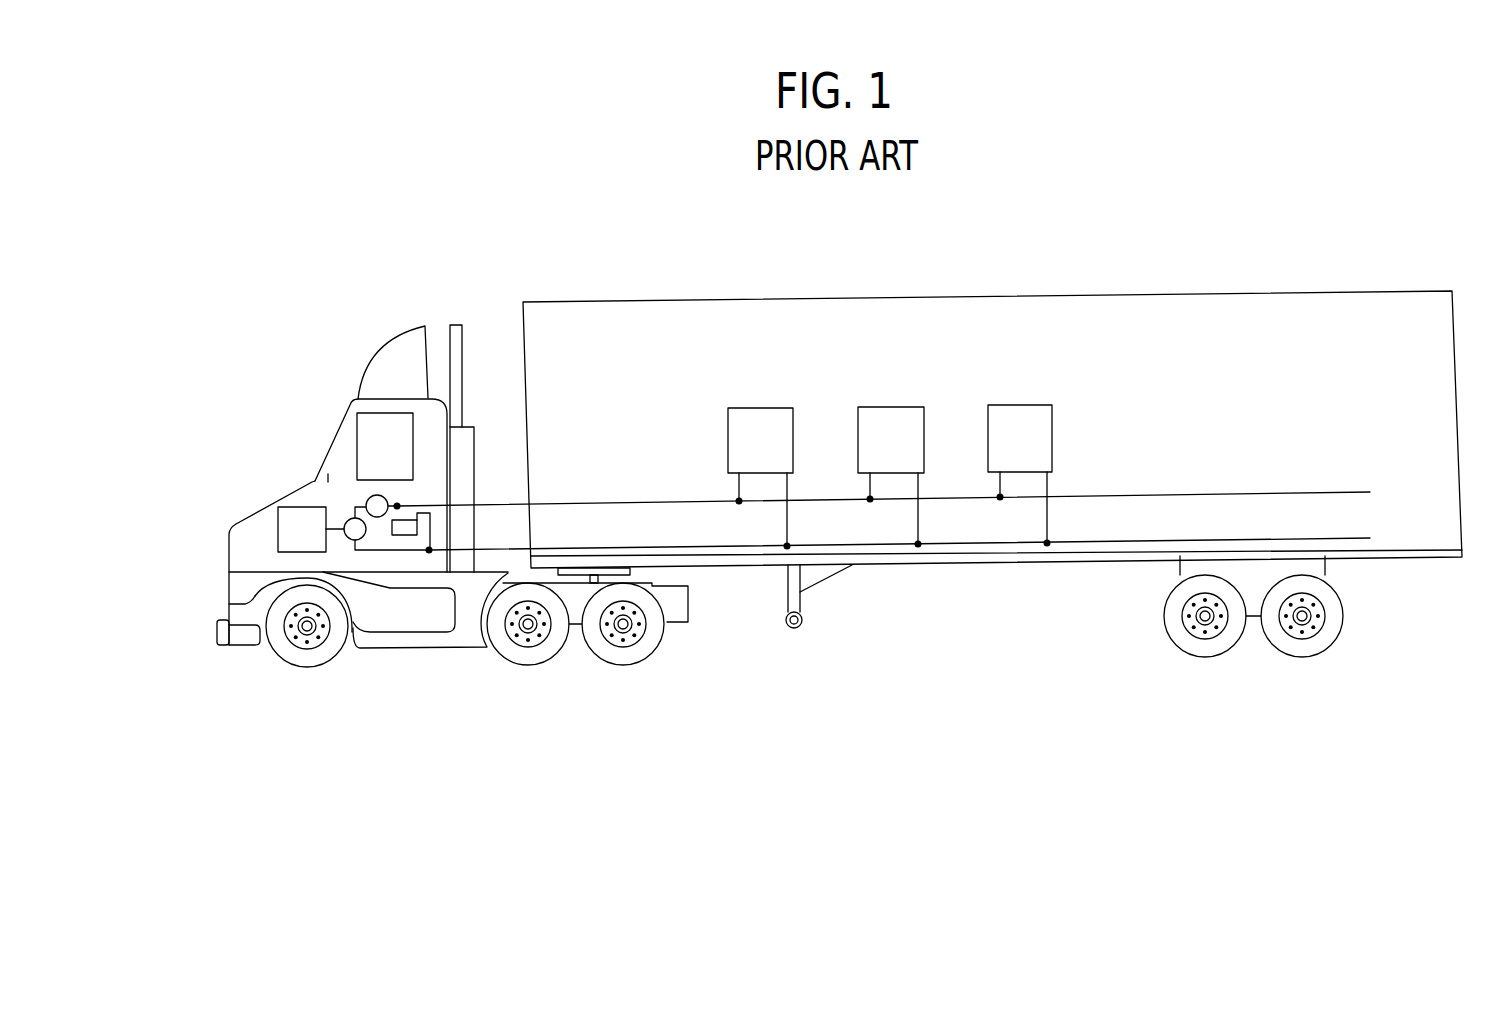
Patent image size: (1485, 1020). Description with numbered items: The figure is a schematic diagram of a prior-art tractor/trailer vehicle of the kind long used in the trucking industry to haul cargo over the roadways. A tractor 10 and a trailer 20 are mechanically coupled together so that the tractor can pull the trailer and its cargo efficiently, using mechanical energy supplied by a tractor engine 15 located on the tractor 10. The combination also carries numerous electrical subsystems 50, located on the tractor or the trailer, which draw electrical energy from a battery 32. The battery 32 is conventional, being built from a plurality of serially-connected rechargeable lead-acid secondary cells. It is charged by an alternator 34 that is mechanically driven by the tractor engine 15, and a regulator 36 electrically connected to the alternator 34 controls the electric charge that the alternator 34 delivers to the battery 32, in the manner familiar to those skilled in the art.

The tractor 10 is at (340, 424).
The tractor engine 15 is at (293, 517).
The trailer 20 is at (920, 295).
The battery 32 is at (412, 532).
The alternator 34 is at (373, 497).
The regulator 36 is at (353, 521).
The electrical subsystems 50 is at (795, 413).